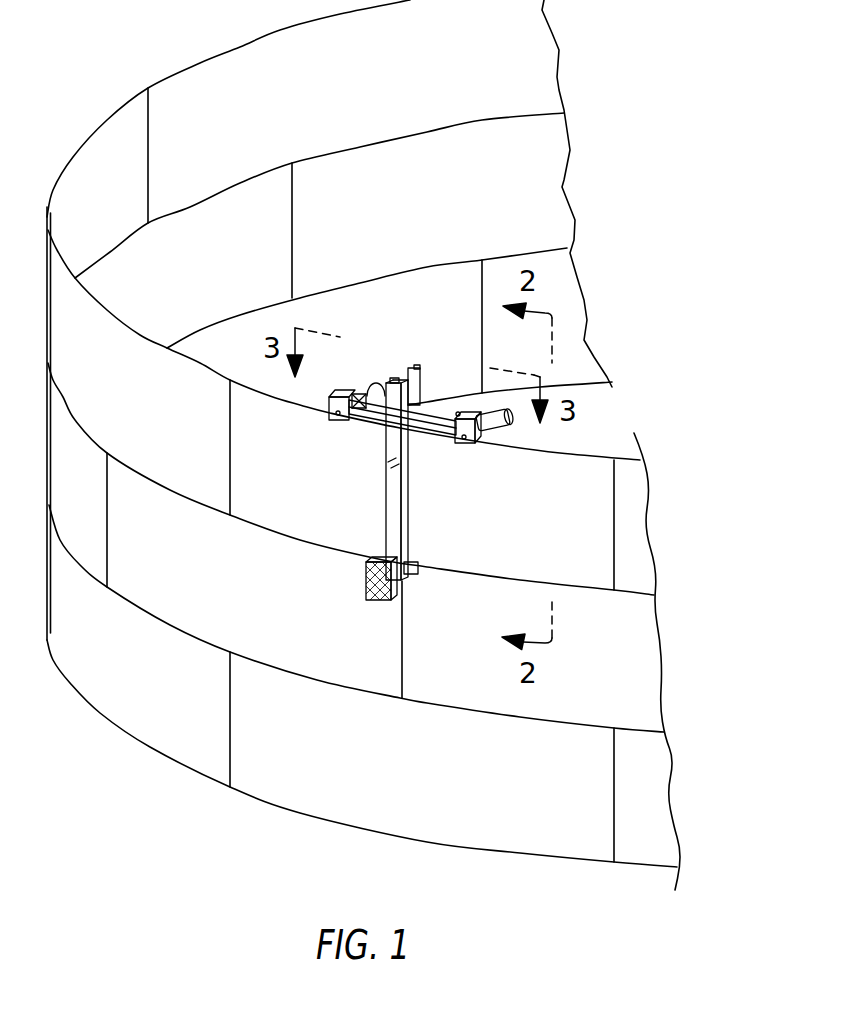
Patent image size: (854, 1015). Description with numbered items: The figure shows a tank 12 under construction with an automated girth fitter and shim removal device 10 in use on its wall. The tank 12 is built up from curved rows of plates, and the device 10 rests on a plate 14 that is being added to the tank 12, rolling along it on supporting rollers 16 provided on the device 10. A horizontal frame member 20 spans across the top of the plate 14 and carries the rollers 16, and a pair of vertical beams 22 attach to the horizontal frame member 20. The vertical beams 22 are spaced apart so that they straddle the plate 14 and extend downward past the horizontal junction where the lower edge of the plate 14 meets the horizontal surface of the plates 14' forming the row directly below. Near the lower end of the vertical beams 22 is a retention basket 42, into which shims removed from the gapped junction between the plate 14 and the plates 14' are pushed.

The automated girth fitter and shim removal device 10 is at (410, 479).
The tank 12 is at (364, 445).
The plate 14 is at (351, 412).
The plates 14' is at (362, 660).
The supporting rollers 16 is at (350, 418).
The horizontal frame member 20 is at (380, 388).
The vertical beams 22 is at (390, 533).
The retention basket 42 is at (368, 603).